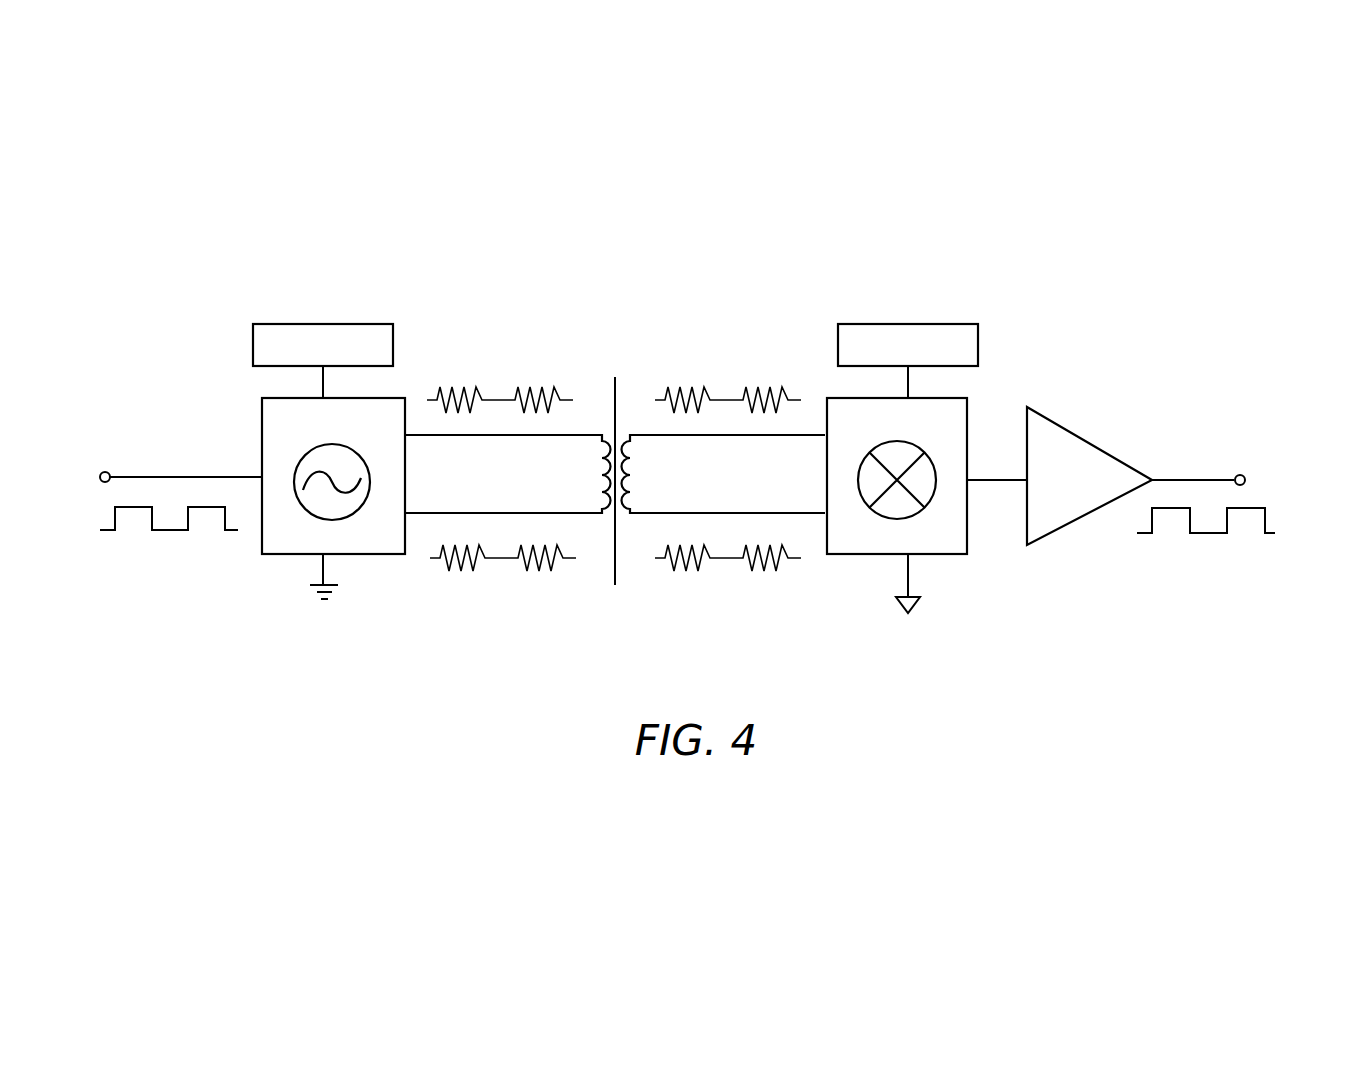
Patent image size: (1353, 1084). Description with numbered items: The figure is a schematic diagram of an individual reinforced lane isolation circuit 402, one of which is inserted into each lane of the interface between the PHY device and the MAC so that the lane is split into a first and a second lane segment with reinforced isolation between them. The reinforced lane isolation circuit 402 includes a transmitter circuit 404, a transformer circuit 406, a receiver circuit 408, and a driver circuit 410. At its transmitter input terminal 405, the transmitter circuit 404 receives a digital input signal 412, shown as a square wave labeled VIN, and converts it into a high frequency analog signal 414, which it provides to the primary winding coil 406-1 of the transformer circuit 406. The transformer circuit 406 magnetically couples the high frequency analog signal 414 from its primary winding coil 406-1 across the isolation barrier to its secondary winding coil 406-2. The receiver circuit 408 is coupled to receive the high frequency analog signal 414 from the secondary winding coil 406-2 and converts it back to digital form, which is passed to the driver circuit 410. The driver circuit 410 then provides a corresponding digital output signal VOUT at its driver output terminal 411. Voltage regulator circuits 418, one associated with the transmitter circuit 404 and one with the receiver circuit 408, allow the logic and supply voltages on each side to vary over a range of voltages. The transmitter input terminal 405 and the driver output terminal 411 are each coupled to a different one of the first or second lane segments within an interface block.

The reinforced lane isolation circuit 402 is at (1104, 330).
The transmitter circuit 404 is at (258, 398).
The transmitter input terminal 405 is at (178, 471).
The transformer circuit 406 is at (632, 330).
The primary winding coil 406-1 is at (598, 395).
The secondary winding coil 406-2 is at (631, 395).
The receiver circuit 408 is at (969, 398).
The driver circuit 410 is at (1083, 437).
The driver output terminal 411 is at (1188, 478).
The digital input signal 412 is at (128, 558).
The high frequency analog signal 414 is at (470, 380).
The voltage regulator circuit 418 is at (306, 323).